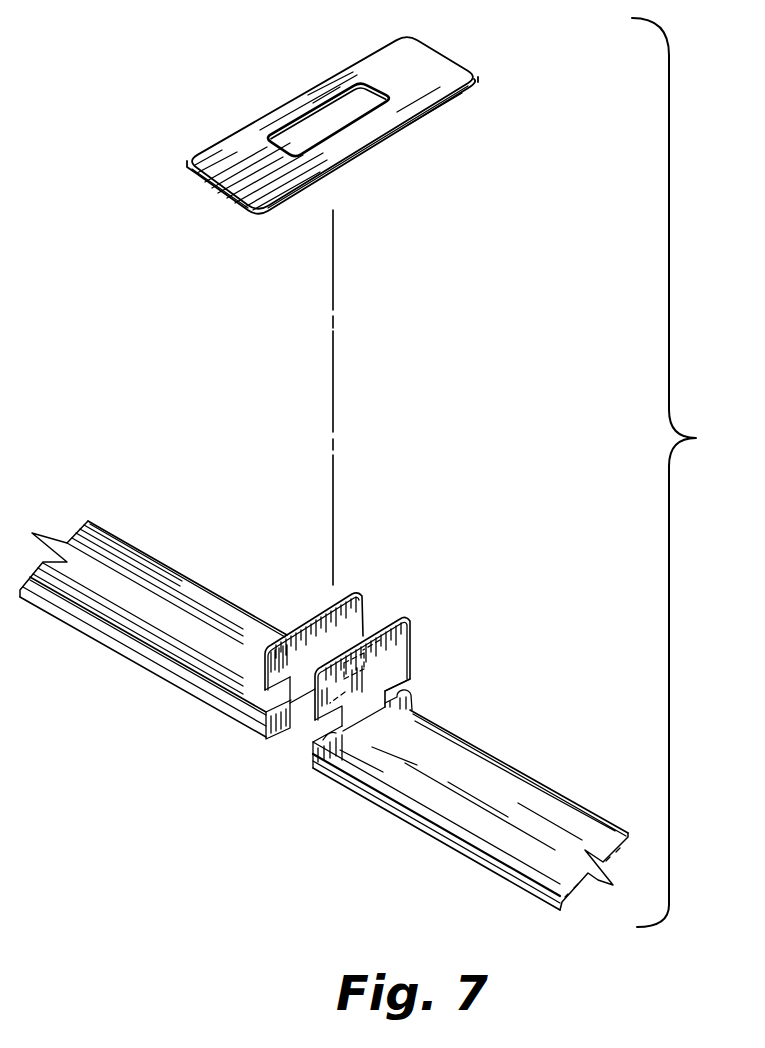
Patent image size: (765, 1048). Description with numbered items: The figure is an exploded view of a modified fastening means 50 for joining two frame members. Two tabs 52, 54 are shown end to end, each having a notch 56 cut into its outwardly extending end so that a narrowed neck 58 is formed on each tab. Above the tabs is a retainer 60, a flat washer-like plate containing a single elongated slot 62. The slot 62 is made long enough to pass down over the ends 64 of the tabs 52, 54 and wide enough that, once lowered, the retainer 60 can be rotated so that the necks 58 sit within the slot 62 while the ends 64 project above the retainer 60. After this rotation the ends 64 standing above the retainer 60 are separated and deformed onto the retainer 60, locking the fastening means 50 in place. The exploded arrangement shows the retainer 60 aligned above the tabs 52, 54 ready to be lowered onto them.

The modified fastening means 50 is at (683, 472).
The tab 52 is at (110, 648).
The tab 54 is at (428, 836).
The notch 56 is at (282, 737).
The neck 58 is at (287, 700).
The retainer 60 is at (468, 98).
The slot 62 is at (290, 154).
The end 64 is at (366, 627).